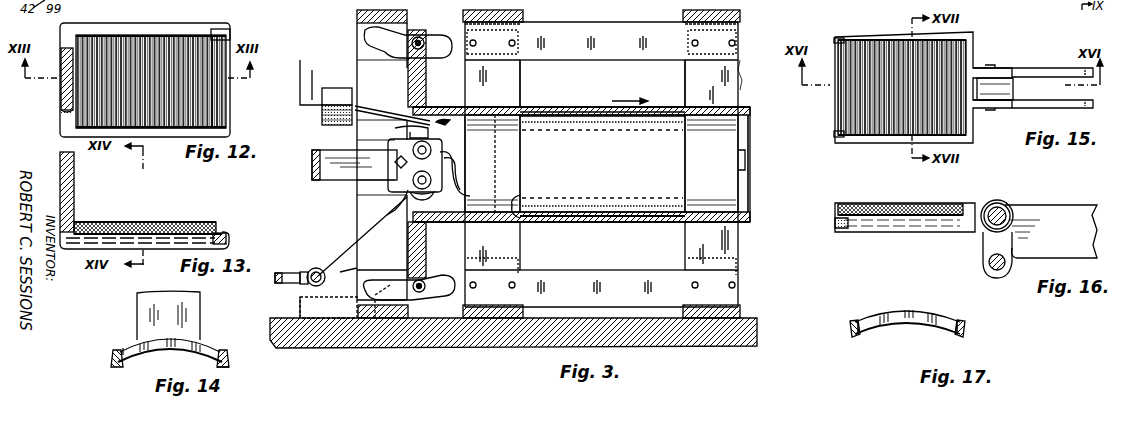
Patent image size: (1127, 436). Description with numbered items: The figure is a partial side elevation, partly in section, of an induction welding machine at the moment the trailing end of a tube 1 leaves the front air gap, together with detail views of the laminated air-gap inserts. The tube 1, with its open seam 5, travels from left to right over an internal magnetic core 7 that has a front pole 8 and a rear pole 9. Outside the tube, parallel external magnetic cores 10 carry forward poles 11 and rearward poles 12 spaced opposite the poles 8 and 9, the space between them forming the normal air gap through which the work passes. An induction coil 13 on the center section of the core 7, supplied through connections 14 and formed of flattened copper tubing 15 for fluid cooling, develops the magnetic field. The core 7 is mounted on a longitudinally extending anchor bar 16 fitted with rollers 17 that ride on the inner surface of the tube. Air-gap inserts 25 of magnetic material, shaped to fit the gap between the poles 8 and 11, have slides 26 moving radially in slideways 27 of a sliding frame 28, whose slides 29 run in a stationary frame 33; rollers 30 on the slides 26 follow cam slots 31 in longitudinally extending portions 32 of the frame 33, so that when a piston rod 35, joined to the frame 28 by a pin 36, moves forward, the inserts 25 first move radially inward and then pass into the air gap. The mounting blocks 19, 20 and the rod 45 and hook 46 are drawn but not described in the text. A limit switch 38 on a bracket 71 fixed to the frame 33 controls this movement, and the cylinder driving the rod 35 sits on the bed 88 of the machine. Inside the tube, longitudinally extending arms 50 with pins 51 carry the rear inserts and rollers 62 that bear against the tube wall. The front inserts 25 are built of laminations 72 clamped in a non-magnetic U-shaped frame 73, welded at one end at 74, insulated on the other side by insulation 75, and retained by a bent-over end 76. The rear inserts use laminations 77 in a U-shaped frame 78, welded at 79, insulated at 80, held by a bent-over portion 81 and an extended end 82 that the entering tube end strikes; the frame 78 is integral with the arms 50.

In FIG. 3, the tube 1 is at (645, 222).
In FIG. 3, the open seam 5 is at (550, 112).
In FIG. 3, the internal magnetic core 7 is at (602, 163).
In FIG. 3, the front pole 8 is at (492, 163).
In FIG. 3, the rear pole 9 is at (711, 163).
In FIG. 3, the external magnetic core 10 is at (605, 37).
In FIG. 3, the forward pole 11 is at (527, 102).
In FIG. 3, the rearward pole 12 is at (740, 104).
In FIG. 3, the induction coil 13 is at (603, 222).
In FIG. 3, the connections 14 is at (508, 205).
In FIG. 3, the flattened copper tubing 15 is at (406, 182).
In FIG. 3, the bar 16 is at (312, 172).
In FIG. 3, the roller 17 is at (410, 203).
In FIG. 3, the mounting block 19 is at (522, 13).
In FIG. 3, the mounting block 20 is at (741, 13).
In FIG. 3, the air-gap insert 25 is at (455, 107).
In FIG. 12, the slide 26 is at (60, 92).
In FIG. 13, the slide 26 is at (75, 172).
In FIG. 14, the slide 26 is at (165, 297).
In FIG. 3, the slide 26 is at (408, 77).
In FIG. 3, the slideway 27 is at (428, 74).
In FIG. 3, the sliding frame 28 is at (348, 260).
In FIG. 3, the slide 29 is at (343, 318).
In FIG. 3, the roller 30 is at (425, 35).
In FIG. 3, the cam slot 31 is at (366, 33).
In FIG. 3, the longitudinally extending portion 32 is at (420, 37).
In FIG. 3, the stationary frame 33 is at (378, 300).
In FIG. 3, the piston rod 35 is at (284, 284).
In FIG. 3, the pin 36 is at (310, 270).
In FIG. 3, the limit switch 38 is at (322, 120).
In FIG. 3, the rod 45 is at (386, 112).
In FIG. 3, the hook 46 is at (450, 124).
In FIG. 15, the arm 50 is at (1045, 72).
In FIG. 16, the arm 50 is at (1060, 218).
In FIG. 16, the pin 51 is at (989, 262).
In FIG. 15, the roller 62 is at (1012, 80).
In FIG. 16, the roller 62 is at (1010, 208).
In FIG. 3, the bracket 71 is at (338, 88).
In FIG. 12, the lamination 72 is at (108, 48).
In FIG. 13, the lamination 72 is at (122, 224).
In FIG. 14, the lamination 72 is at (188, 344).
In FIG. 12, the U-shaped frame 73 is at (70, 33).
In FIG. 13, the U-shaped frame 73 is at (78, 224).
In FIG. 14, the U-shaped frame 73 is at (113, 354).
In FIG. 12, the weld 74 is at (167, 128).
In FIG. 14, the weld 74 is at (122, 346).
In FIG. 12, the insulation 75 is at (188, 36).
In FIG. 14, the insulation 75 is at (230, 364).
In FIG. 12, the bent-over end 76 is at (230, 32).
In FIG. 13, the bent-over end 76 is at (229, 238).
In FIG. 15, the lamination 77 is at (895, 120).
In FIG. 16, the lamination 77 is at (890, 220).
In FIG. 17, the lamination 77 is at (895, 330).
In FIG. 15, the U-shaped frame 78 is at (972, 53).
In FIG. 16, the U-shaped frame 78 is at (978, 203).
In FIG. 17, the U-shaped frame 78 is at (850, 326).
In FIG. 15, the weld 79 is at (890, 40).
In FIG. 17, the weld 79 is at (858, 320).
In FIG. 15, the insulation 80 is at (903, 140).
In FIG. 17, the insulation 80 is at (958, 320).
In FIG. 15, the bent-over portion 81 is at (834, 132).
In FIG. 15, the extended end 82 is at (836, 38).
In FIG. 16, the extended end 82 is at (835, 223).
In FIG. 3, the bed 88 is at (703, 343).